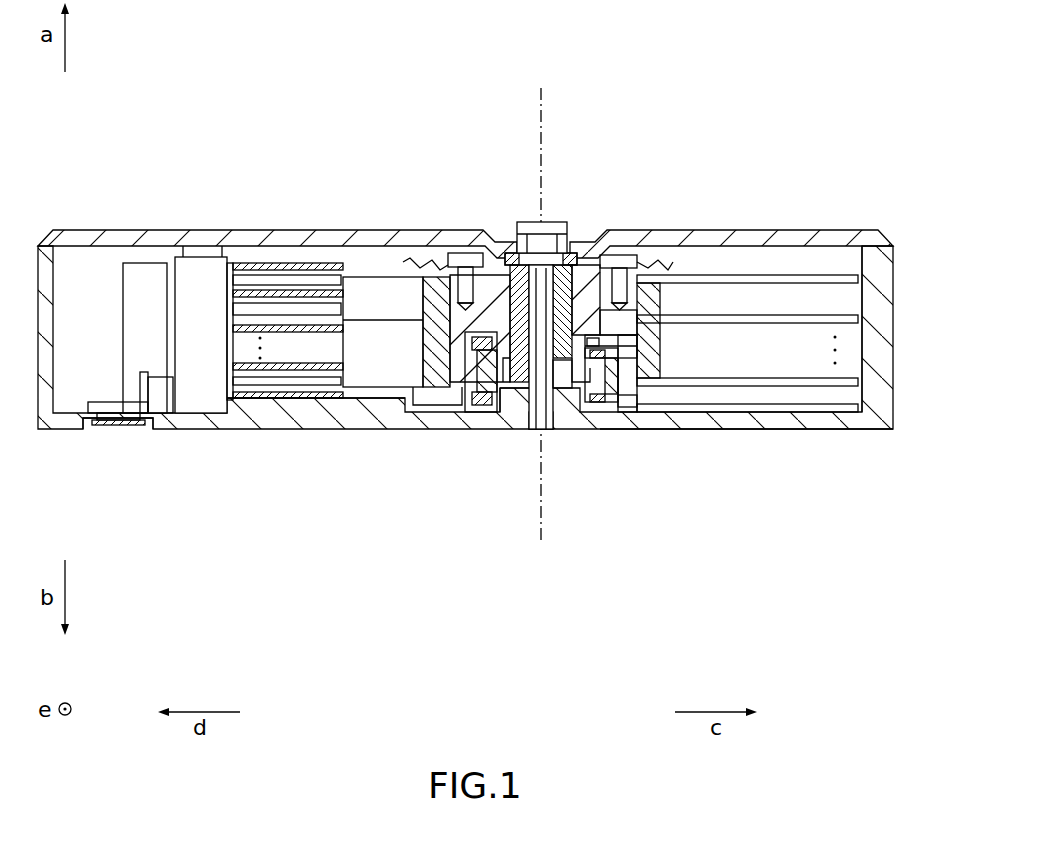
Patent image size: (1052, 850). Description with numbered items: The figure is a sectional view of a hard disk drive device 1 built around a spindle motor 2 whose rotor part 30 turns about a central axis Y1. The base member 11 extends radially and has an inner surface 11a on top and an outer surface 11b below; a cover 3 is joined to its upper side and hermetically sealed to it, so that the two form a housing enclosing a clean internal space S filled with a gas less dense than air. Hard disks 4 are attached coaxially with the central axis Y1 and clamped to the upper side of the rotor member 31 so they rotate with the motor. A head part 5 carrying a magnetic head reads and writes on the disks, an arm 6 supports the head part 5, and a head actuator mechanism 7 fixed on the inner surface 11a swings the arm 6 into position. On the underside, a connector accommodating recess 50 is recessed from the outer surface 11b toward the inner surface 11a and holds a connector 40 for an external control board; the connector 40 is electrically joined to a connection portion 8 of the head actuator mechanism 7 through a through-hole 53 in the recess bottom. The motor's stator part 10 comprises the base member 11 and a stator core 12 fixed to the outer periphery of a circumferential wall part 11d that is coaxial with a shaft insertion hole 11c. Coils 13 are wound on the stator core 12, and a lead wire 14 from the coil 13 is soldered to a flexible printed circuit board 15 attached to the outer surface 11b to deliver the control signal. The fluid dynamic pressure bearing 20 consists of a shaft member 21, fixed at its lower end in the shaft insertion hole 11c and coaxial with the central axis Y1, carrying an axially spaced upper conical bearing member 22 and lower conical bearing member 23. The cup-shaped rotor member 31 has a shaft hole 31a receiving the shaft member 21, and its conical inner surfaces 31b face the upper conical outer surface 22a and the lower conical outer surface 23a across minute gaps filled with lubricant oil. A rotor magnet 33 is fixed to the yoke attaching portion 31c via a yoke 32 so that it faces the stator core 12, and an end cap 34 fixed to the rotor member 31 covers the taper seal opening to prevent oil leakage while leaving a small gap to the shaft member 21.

The hard disk drive device 1 is at (838, 118).
The spindle motor 2 is at (395, 258).
The cover 3 is at (880, 244).
The hard disk 4 is at (860, 272).
The head part 5 is at (345, 292).
The arm 6 is at (292, 295).
The head actuator mechanism 7 is at (133, 280).
The connection portion 8 is at (118, 414).
The stator part 10 is at (567, 415).
The base member 11 is at (802, 445).
The inner surface 11a is at (853, 406).
The outer surface 11b is at (835, 437).
The shaft insertion hole 11c is at (537, 410).
The circumferential wall part 11d is at (567, 412).
The stator core 12 is at (612, 415).
The coil 13 is at (588, 405).
The lead wire 14 is at (467, 405).
The flexible printed circuit board 15 is at (303, 425).
The fluid dynamic pressure bearing 20 is at (555, 262).
The shaft member 21 is at (529, 262).
The upper conical bearing member 22 is at (572, 268).
The upper conical outer surface 22a is at (600, 270).
The lower conical bearing member 23 is at (655, 345).
The lower conical outer surface 23a is at (579, 351).
The rotor part 30 is at (652, 292).
The rotor member 31 is at (620, 312).
The shaft hole 31a is at (862, 312).
The conical inner surface 31b is at (518, 274).
The yoke attaching portion 31c is at (640, 368).
The yoke 32 is at (655, 357).
The rotor magnet 33 is at (640, 403).
The end cap 34 is at (512, 262).
The connector 40 is at (115, 423).
The connector accommodating recess 50 is at (152, 436).
The through-hole 53 is at (100, 412).
The internal space S is at (860, 306).
The central axis Y1 is at (545, 93).